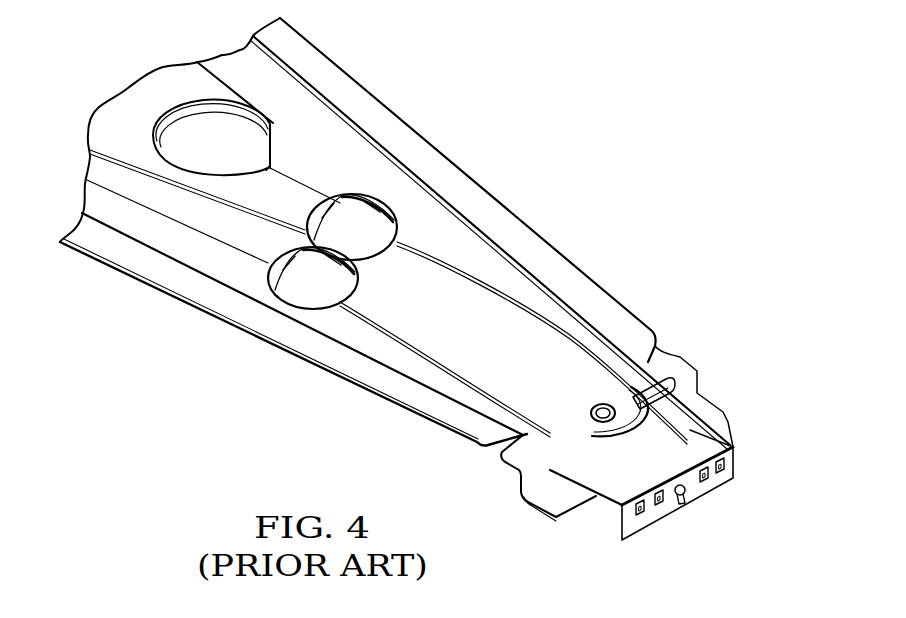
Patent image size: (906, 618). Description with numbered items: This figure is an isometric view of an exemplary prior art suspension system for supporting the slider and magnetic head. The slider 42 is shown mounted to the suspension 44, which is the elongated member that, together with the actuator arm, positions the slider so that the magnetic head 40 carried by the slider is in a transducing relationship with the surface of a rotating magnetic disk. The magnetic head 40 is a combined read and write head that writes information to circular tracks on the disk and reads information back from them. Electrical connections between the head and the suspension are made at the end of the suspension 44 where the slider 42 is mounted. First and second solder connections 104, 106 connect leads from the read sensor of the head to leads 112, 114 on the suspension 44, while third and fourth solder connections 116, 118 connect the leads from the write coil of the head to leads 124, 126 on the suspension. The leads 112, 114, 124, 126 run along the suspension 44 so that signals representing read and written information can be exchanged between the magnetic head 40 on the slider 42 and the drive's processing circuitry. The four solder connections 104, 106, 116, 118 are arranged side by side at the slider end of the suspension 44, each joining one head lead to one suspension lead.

The suspension 44 is at (503, 201).
The lead on the suspension 112 is at (392, 333).
The lead on the suspension 114 is at (558, 323).
The lead on the suspension 124 is at (408, 345).
The lead on the suspension 126 is at (480, 283).
The slider 42 is at (571, 522).
The magnetic head 40 is at (681, 505).
The first solder connection 104 is at (636, 514).
The third solder connection 116 is at (658, 506).
The fourth solder connection 118 is at (708, 476).
The second solder connection 106 is at (724, 460).